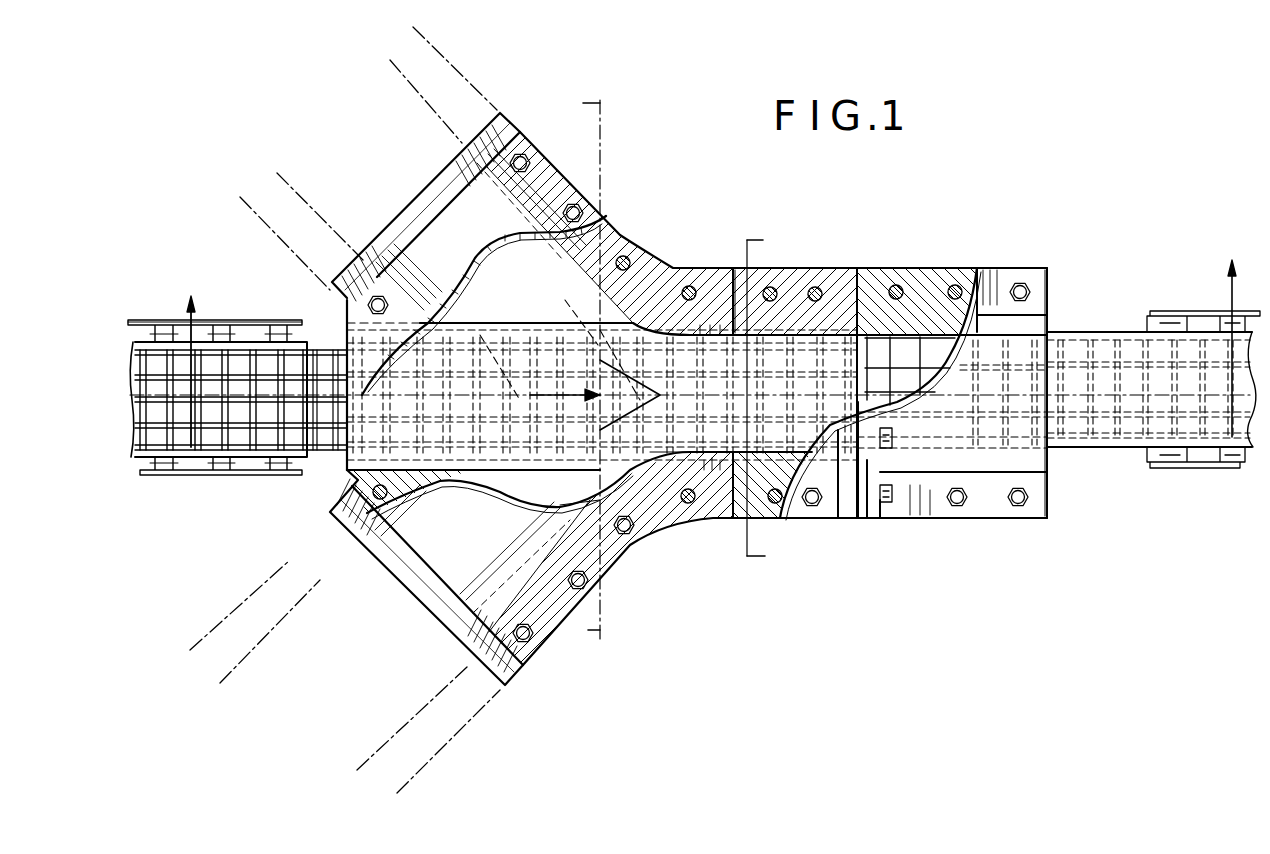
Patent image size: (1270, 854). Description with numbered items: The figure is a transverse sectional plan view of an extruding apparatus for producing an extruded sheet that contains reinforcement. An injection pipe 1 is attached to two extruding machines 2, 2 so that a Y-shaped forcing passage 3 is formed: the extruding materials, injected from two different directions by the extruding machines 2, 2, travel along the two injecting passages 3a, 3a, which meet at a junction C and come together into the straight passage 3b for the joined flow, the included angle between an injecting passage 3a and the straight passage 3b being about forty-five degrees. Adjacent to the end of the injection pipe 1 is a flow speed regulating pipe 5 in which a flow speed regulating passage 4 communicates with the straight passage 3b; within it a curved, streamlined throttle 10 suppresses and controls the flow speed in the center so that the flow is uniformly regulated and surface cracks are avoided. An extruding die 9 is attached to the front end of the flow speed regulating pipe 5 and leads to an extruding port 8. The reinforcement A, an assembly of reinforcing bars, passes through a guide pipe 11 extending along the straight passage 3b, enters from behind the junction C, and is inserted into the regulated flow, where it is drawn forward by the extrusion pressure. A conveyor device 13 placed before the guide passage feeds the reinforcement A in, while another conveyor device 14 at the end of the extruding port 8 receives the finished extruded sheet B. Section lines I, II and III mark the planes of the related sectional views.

The injection pipe 1 is at (680, 266).
The extruding machine 2 is at (465, 78).
The forcing passage 3 is at (557, 293).
The injecting passage 3a is at (606, 226).
The straight passage 3b is at (712, 455).
The flow speed regulating passage 4 is at (818, 343).
The flow speed regulating pipe 5 is at (805, 272).
The extruding port 8 is at (1048, 328).
The extruding die 9 is at (910, 275).
The throttle 10 is at (800, 495).
The guide pipe 11 is at (585, 500).
The conveyor device 13 is at (232, 325).
The conveyor device 14 is at (1175, 311).
The reinforcement A is at (160, 350).
The extruded sheet B is at (1100, 333).
The junction C is at (527, 400).
The section line I is at (711, 337).
The section line II is at (575, 376).
The section line III is at (776, 399).